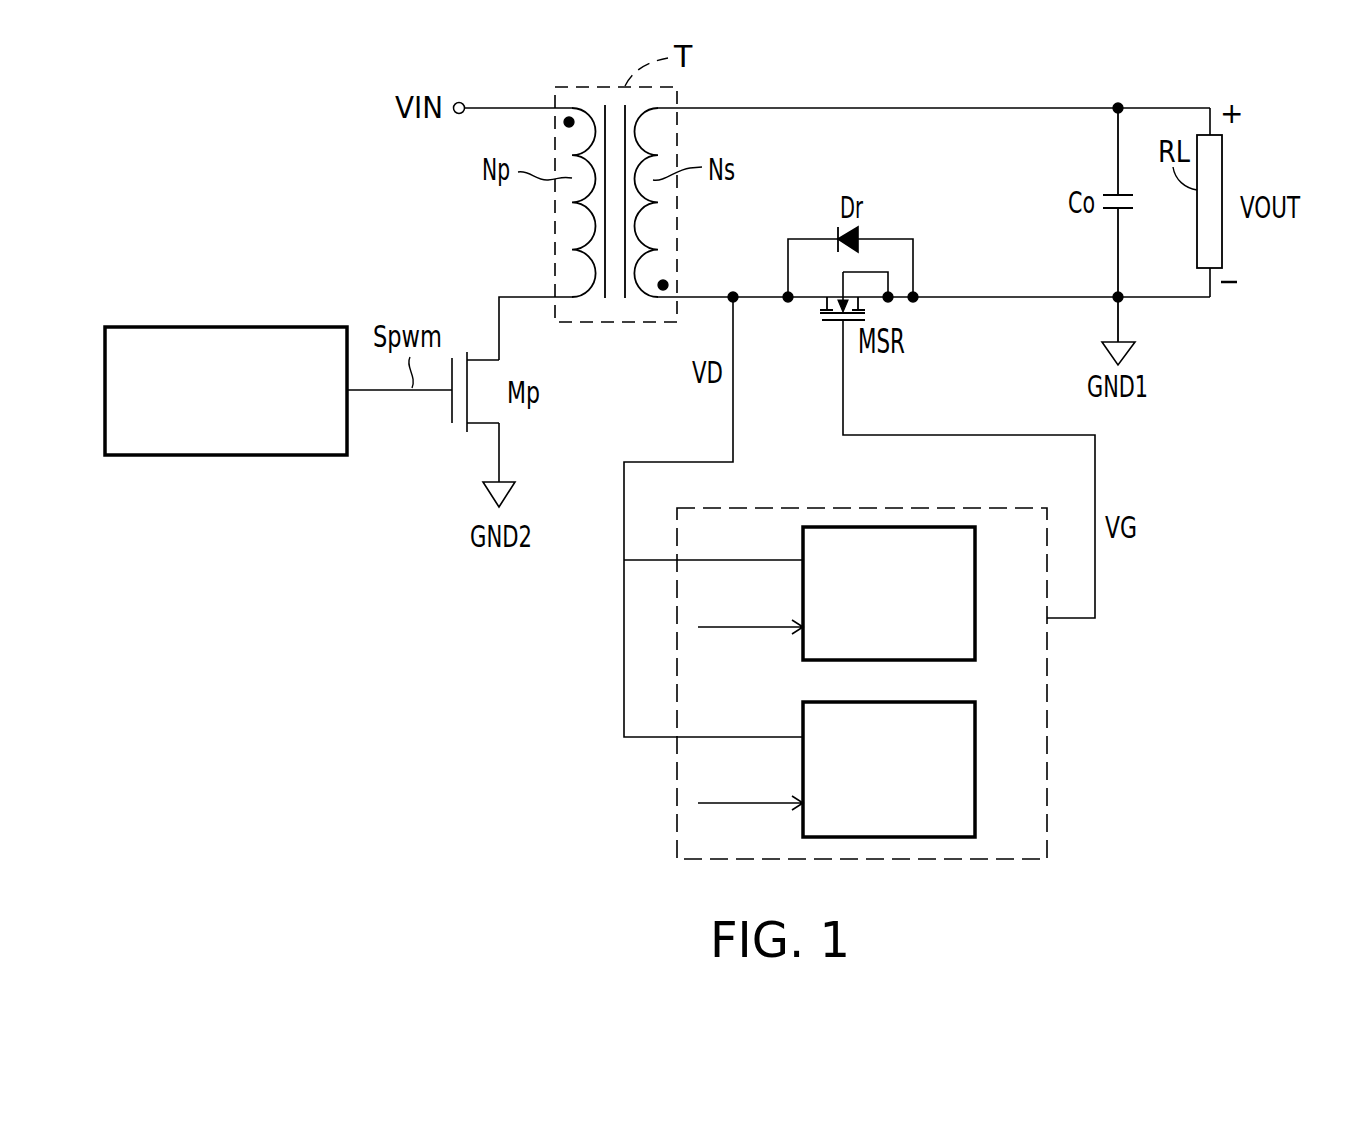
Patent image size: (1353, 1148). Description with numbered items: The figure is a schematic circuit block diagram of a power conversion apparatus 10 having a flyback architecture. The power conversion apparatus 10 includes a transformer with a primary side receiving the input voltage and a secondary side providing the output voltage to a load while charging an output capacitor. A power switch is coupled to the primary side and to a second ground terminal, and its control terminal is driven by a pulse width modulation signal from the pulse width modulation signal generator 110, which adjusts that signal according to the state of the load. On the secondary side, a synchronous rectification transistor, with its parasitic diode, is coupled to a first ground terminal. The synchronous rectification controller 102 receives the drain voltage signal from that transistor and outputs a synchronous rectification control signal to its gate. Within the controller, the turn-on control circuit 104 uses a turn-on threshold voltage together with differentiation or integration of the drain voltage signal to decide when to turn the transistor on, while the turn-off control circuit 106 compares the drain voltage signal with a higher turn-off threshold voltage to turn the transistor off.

The power conversion apparatus 10 is at (1225, 897).
The synchronous rectification controller 102 is at (862, 659).
The turn-on control circuit 104 is at (977, 592).
The turn-off control circuit 106 is at (977, 768).
The pulse width modulation signal generator 110 is at (253, 327).